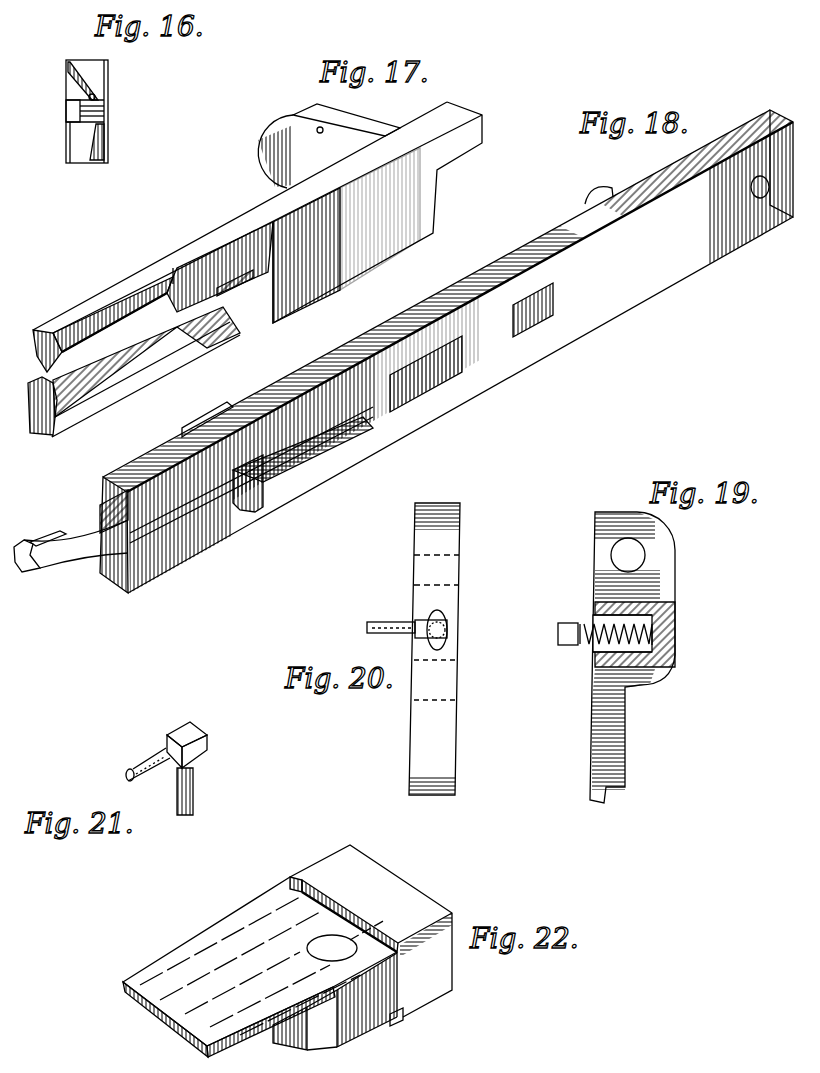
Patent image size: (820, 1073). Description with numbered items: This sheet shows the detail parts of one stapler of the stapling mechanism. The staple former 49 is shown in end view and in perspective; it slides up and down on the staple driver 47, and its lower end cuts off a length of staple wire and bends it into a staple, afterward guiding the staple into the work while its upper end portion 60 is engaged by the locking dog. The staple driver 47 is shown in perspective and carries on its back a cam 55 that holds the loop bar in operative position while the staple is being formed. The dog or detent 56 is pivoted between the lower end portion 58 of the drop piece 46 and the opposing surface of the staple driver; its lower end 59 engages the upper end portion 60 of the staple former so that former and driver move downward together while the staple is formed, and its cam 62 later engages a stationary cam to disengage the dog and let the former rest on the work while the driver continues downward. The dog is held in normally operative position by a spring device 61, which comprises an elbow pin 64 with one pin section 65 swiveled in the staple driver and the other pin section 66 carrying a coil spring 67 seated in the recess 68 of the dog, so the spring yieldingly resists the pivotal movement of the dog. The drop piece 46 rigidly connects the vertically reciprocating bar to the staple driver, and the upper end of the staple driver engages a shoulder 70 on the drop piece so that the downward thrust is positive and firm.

In FIG. 22, the drop piece 46 is at (342, 876).
In FIG. 18, the staple driver 47 is at (446, 351).
In FIG. 17, the staple former 49 is at (175, 275).
In FIG. 18, the cam 55 is at (310, 468).
In FIG. 19, the dog 56 is at (675, 618).
In FIG. 22, the lower end portion of the drop piece 58 is at (260, 967).
In FIG. 19, the lower end of the dog 59 is at (606, 795).
In FIG. 20, the lower end of the dog 59 is at (458, 795).
In FIG. 17, the upper end portion of the staple former 60 is at (482, 118).
In FIG. 19, the spring device 61 is at (590, 640).
In FIG. 19, the cam of the dog 62 is at (655, 680).
In FIG. 20, the cam of the dog 62 is at (462, 672).
In FIG. 19, the elbow pin 64 is at (557, 634).
In FIG. 20, the elbow pin 64 is at (418, 622).
In FIG. 21, the elbow pin 64 is at (200, 756).
In FIG. 20, the pin section 65 is at (382, 626).
In FIG. 21, the pin section 65 is at (145, 768).
In FIG. 21, the pin section 66 is at (185, 815).
In FIG. 19, the coil spring 67 is at (598, 613).
In FIG. 20, the coil spring 67 is at (448, 634).
In FIG. 19, the recess 68 is at (596, 650).
In FIG. 20, the recess 68 is at (445, 618).
In FIG. 22, the shoulder 70 is at (396, 1024).